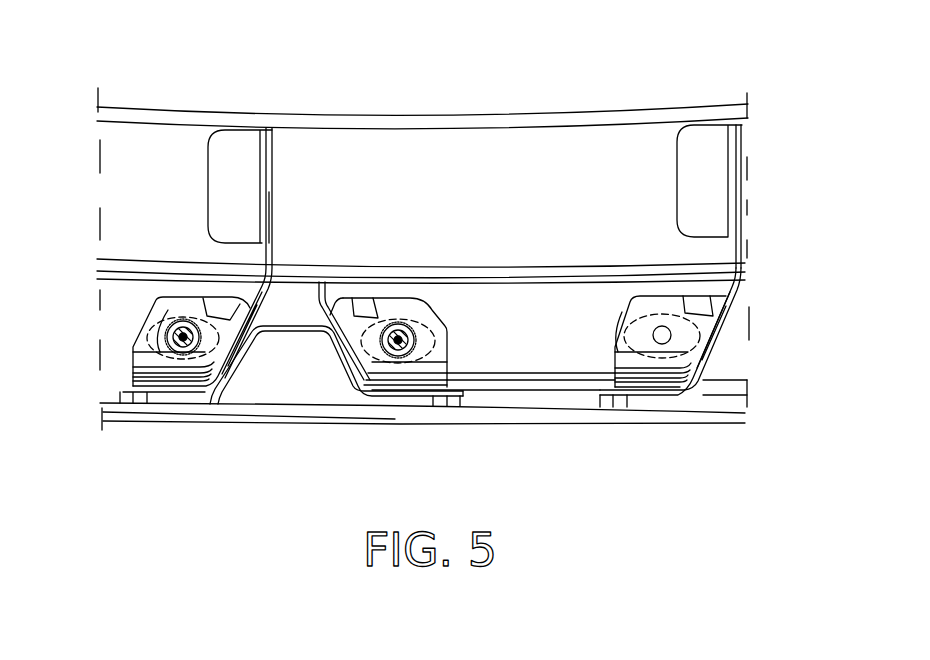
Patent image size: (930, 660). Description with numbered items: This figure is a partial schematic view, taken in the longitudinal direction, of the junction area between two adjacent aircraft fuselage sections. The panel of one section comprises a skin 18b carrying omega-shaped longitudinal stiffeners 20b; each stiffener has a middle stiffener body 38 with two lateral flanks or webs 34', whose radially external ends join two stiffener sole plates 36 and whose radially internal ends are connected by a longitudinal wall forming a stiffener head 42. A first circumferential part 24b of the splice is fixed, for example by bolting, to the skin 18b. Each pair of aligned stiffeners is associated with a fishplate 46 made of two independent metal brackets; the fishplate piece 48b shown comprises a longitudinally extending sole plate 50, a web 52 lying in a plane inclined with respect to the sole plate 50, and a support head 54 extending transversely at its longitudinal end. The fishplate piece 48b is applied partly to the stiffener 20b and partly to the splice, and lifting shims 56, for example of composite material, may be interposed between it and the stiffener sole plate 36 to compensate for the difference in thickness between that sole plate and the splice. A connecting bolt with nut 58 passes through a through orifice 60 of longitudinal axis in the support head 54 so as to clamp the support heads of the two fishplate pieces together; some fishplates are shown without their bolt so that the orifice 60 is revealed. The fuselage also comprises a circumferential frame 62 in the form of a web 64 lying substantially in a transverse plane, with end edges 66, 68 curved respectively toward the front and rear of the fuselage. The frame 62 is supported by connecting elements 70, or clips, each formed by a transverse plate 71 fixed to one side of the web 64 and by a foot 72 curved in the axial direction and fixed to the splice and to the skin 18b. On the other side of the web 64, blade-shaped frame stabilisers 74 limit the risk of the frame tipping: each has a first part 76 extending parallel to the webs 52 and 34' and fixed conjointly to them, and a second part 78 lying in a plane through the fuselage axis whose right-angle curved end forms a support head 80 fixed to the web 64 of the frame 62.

The skin 18b is at (137, 413).
The longitudinal stiffener 20b is at (398, 415).
The first circumferential part of the splice 24b is at (286, 401).
The lateral flank or web 34' is at (340, 431).
The stiffener sole plate 36 is at (178, 398).
The middle stiffener body 38 is at (344, 385).
The stiffener head 42 is at (293, 322).
The fishplate 46 is at (612, 349).
The fishplate piece 48b is at (130, 358).
The sole plate 50 is at (643, 390).
The web 52 is at (380, 317).
The support head 54 is at (156, 297).
The lifting shim 56 is at (457, 373).
The connecting bolt with nut 58 is at (168, 333).
The through orifice 60 is at (655, 327).
The circumferential frame 62 is at (586, 103).
The web 64 is at (125, 203).
The end edge 66 is at (166, 111).
The end edge 68 is at (750, 262).
The connecting element 70 is at (748, 282).
The transverse plate 71 is at (557, 357).
The foot 72 is at (523, 388).
The frame stabiliser 74 is at (204, 183).
The first part 76 is at (728, 318).
The second part 78 is at (750, 213).
The support head 80 is at (704, 145).